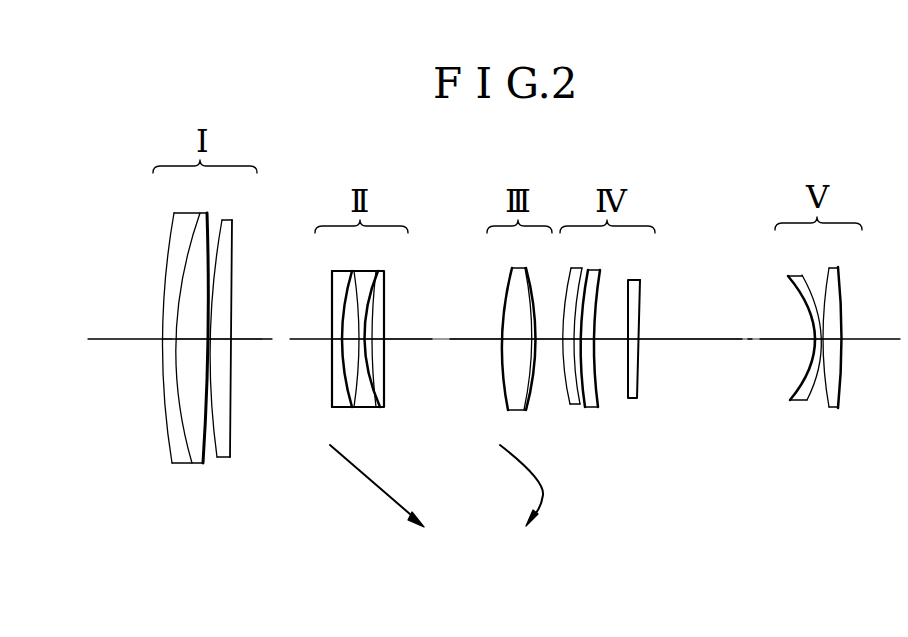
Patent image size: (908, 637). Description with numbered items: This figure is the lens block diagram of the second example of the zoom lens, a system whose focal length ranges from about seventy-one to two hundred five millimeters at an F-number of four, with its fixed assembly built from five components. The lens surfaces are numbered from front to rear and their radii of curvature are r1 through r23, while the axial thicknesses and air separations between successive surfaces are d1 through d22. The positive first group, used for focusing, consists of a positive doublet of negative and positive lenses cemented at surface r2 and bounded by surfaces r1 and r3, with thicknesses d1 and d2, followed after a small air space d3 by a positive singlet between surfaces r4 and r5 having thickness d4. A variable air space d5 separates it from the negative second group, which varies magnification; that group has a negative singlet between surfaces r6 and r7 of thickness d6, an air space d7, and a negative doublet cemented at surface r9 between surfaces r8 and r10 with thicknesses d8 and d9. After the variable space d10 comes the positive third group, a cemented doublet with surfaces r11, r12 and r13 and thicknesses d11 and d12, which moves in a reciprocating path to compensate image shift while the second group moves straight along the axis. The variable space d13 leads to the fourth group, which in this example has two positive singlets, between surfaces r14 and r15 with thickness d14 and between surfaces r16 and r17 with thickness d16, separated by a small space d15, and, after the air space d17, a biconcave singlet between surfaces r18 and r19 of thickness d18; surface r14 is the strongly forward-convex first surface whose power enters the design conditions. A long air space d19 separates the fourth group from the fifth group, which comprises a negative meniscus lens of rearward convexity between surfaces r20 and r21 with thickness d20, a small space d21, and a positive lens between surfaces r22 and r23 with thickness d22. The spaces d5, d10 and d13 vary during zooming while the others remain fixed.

The axial thickness of first surface interval d1 is at (170, 338).
The axial thickness of second surface interval d2 is at (193, 338).
The axial air space of third surface interval d3 is at (212, 338).
The axial thickness of fourth surface interval d4 is at (218, 338).
The variable axial air space between first and second groups d5 is at (280, 337).
The axial thickness of sixth surface interval d6 is at (337, 338).
The axial air space of seventh surface interval d7 is at (351, 338).
The axial thickness of eighth surface interval d8 is at (368, 338).
The axial thickness of ninth surface interval d9 is at (380, 338).
The variable axial air space between second and third groups d10 is at (441, 337).
The axial thickness of eleventh surface interval d11 is at (513, 338).
The axial thickness of twelfth surface interval d12 is at (532, 338).
The variable axial air space between third and fourth groups d13 is at (548, 338).
The axial thickness of fourteenth surface interval d14 is at (570, 338).
The axial air space of fifteenth surface interval d15 is at (578, 338).
The axial thickness of sixteenth surface interval d16 is at (589, 338).
The axial air space of seventeenth surface interval d17 is at (613, 337).
The axial thickness of eighteenth surface interval d18 is at (634, 338).
The axial air space between fourth and fifth groups d19 is at (708, 337).
The axial thickness of twentieth surface interval d20 is at (818, 338).
The axial air space of twenty-first surface interval d21 is at (822, 338).
The axial thickness of twenty-second surface interval d22 is at (833, 338).
The first lens surface r1 is at (168, 443).
The second lens surface r2 is at (190, 450).
The third lens surface r3 is at (205, 446).
The fourth lens surface r4 is at (216, 447).
The fifth lens surface r5 is at (230, 448).
The sixth lens surface r6 is at (331, 405).
The seventh lens surface r7 is at (346, 408).
The eighth lens surface r8 is at (358, 407).
The ninth lens surface r9 is at (375, 407).
The tenth lens surface r10 is at (386, 407).
The eleventh lens surface r11 is at (507, 410).
The twelfth lens surface r12 is at (520, 410).
The thirteenth lens surface r13 is at (533, 410).
The fourteenth lens surface r14 is at (568, 405).
The fifteenth lens surface r15 is at (580, 405).
The sixteenth lens surface r16 is at (592, 408).
The seventeenth lens surface r17 is at (600, 408).
The eighteenth lens surface r18 is at (630, 399).
The nineteenth lens surface r19 is at (638, 399).
The twentieth lens surface r20 is at (790, 400).
The twenty-first lens surface r21 is at (813, 400).
The twenty-second lens surface r22 is at (830, 407).
The twenty-third lens surface r23 is at (840, 405).